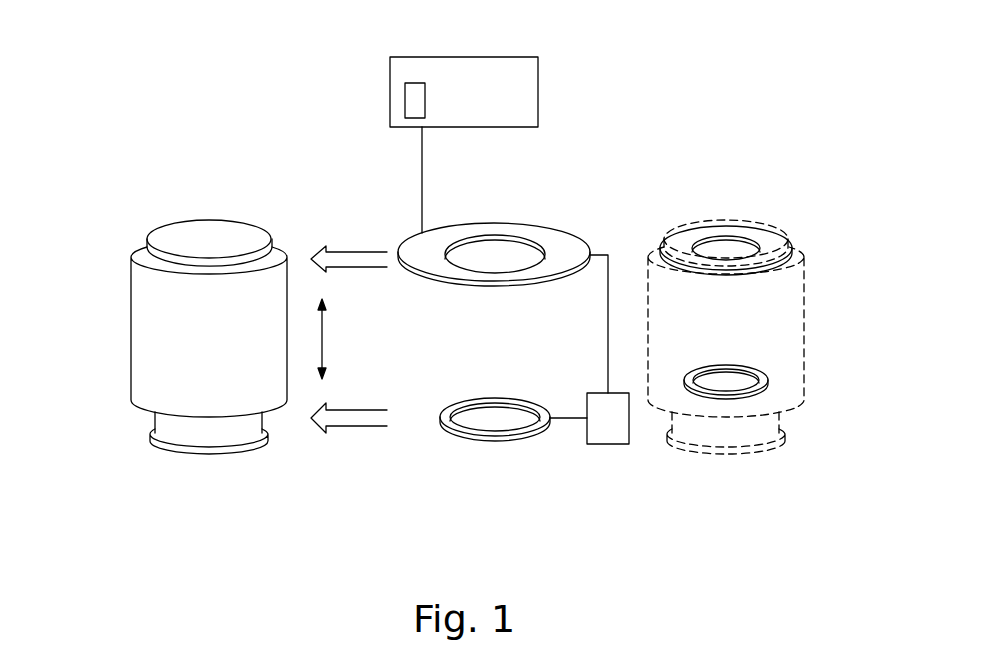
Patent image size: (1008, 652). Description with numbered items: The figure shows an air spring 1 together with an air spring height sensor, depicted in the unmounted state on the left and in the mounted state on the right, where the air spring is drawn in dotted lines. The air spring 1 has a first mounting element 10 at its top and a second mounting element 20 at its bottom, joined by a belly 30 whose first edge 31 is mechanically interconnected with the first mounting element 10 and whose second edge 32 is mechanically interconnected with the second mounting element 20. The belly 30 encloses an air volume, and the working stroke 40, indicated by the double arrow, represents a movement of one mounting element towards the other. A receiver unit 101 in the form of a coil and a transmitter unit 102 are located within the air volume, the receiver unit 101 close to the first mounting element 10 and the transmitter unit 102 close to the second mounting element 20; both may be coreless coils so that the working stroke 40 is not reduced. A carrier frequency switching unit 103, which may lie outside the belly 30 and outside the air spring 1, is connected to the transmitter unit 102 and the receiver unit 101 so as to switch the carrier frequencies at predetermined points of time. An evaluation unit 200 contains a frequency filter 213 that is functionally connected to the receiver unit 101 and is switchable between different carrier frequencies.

The air spring 1 is at (96, 294).
The first mounting element 10 is at (210, 235).
The second mounting element 20 is at (252, 452).
The belly 30 is at (127, 353).
The first edge 31 is at (137, 248).
The second edge 32 is at (140, 413).
The working stroke 40 is at (325, 322).
The receiver unit 101 is at (553, 243).
The transmitter unit 102 is at (520, 438).
The carrier frequency switching unit 103 is at (603, 429).
The evaluation unit 200 is at (500, 80).
The frequency filter 213 is at (413, 103).